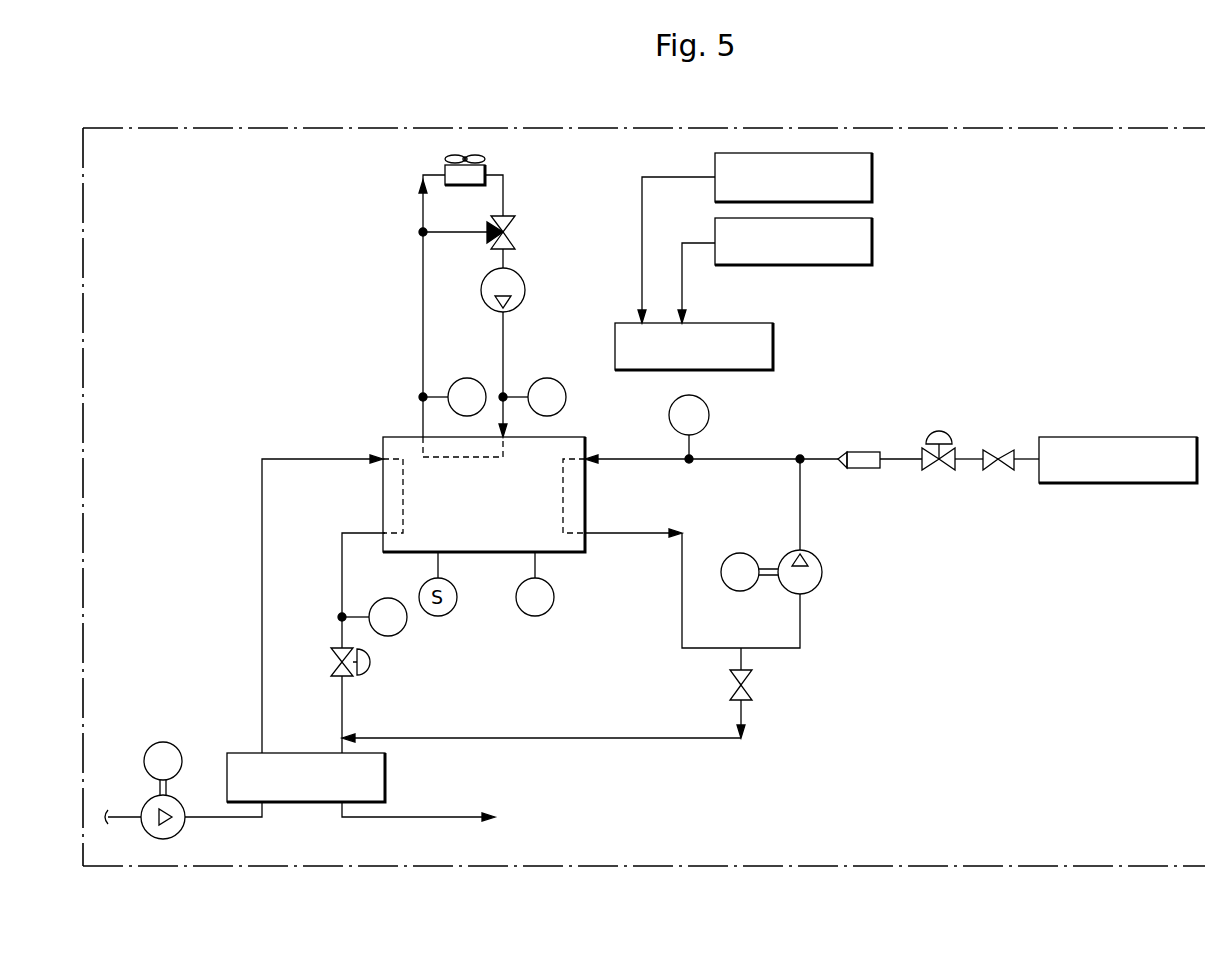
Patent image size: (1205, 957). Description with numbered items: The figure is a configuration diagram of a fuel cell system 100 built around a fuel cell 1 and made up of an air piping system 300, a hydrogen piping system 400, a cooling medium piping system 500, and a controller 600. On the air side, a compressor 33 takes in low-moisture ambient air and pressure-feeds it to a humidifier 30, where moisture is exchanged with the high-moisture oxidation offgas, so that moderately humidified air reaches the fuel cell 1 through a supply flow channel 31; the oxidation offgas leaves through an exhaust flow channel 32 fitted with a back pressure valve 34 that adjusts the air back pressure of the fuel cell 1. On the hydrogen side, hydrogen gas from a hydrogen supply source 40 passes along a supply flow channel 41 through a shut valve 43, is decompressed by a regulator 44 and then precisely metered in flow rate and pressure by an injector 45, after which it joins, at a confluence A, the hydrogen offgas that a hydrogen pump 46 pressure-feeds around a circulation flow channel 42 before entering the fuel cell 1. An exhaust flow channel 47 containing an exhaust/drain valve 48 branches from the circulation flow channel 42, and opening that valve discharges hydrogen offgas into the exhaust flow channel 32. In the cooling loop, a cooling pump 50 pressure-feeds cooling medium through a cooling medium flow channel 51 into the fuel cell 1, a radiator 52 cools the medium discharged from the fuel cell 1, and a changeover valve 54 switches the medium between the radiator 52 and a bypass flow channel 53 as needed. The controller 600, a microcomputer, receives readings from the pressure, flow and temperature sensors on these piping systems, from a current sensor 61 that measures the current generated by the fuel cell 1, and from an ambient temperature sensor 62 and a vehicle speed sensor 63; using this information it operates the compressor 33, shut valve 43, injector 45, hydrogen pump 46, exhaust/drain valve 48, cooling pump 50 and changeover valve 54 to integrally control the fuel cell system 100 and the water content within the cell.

The fuel cell system 100 is at (582, 128).
The cooling medium piping system 500 is at (406, 287).
The radiator 52 is at (445, 170).
The cooling medium flow channel 51 is at (420, 212).
The bypass flow channel 53 is at (473, 236).
The changeover valve 54 is at (508, 214).
The cooling pump 50 is at (525, 284).
The fuel cell 1 is at (503, 553).
The current sensor 61 is at (535, 584).
The air piping system 300 is at (231, 657).
The supply flow channel 31 is at (327, 458).
The exhaust flow channel 32 is at (345, 571).
The back pressure valve 34 is at (372, 668).
The humidifier 30 is at (386, 782).
The compressor 33 is at (175, 838).
The ambient temperature sensor 62 is at (873, 183).
The vehicle speed sensor 63 is at (873, 247).
The controller 600 is at (775, 351).
The hydrogen piping system 400 is at (937, 403).
The supply flow channel 41 is at (748, 458).
The confluence A is at (803, 463).
The injector 45 is at (863, 470).
The regulator 44 is at (945, 472).
The shut valve 43 is at (1005, 472).
The hydrogen supply source 40 is at (1105, 437).
The circulation flow channel 42 is at (682, 610).
The hydrogen pump 46 is at (822, 573).
The exhaust flow channel 47 is at (608, 737).
The exhaust/drain valve 48 is at (755, 690).